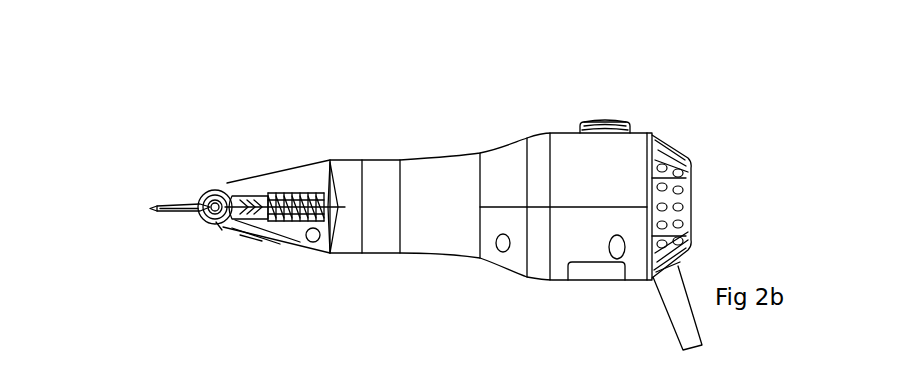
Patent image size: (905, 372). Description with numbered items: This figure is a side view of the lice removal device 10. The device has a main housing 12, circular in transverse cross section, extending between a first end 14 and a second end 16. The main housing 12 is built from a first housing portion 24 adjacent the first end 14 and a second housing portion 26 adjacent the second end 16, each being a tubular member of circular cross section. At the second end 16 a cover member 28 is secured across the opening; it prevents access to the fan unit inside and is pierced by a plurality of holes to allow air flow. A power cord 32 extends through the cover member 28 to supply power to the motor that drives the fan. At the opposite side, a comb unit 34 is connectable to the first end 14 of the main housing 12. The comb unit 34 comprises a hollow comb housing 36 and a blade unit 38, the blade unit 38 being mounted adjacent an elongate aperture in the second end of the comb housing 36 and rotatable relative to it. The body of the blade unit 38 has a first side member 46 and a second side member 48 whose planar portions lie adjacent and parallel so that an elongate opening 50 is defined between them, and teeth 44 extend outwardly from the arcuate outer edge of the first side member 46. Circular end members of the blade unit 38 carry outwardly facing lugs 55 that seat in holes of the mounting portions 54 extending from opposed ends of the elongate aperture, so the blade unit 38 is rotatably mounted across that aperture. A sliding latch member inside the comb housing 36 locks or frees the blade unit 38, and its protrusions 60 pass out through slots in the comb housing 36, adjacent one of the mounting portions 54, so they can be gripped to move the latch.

The lice removal device 10 is at (507, 97).
The main housing 12 is at (437, 262).
The first end 14 is at (363, 168).
The second end 16 is at (653, 130).
The first housing portion 24 is at (448, 173).
The second housing portion 26 is at (558, 138).
The cover member 28 is at (685, 195).
The power cord 32 is at (677, 327).
The comb unit 34 is at (265, 162).
The comb housing 36 is at (305, 167).
The blade unit 38 is at (182, 185).
The teeth 44 is at (165, 220).
The first side member 46 is at (193, 223).
The second side member 48 is at (200, 195).
The elongate opening 50 is at (190, 207).
The mounting portions 54 is at (224, 228).
The lugs 55 is at (218, 226).
The protrusions 60 is at (225, 226).